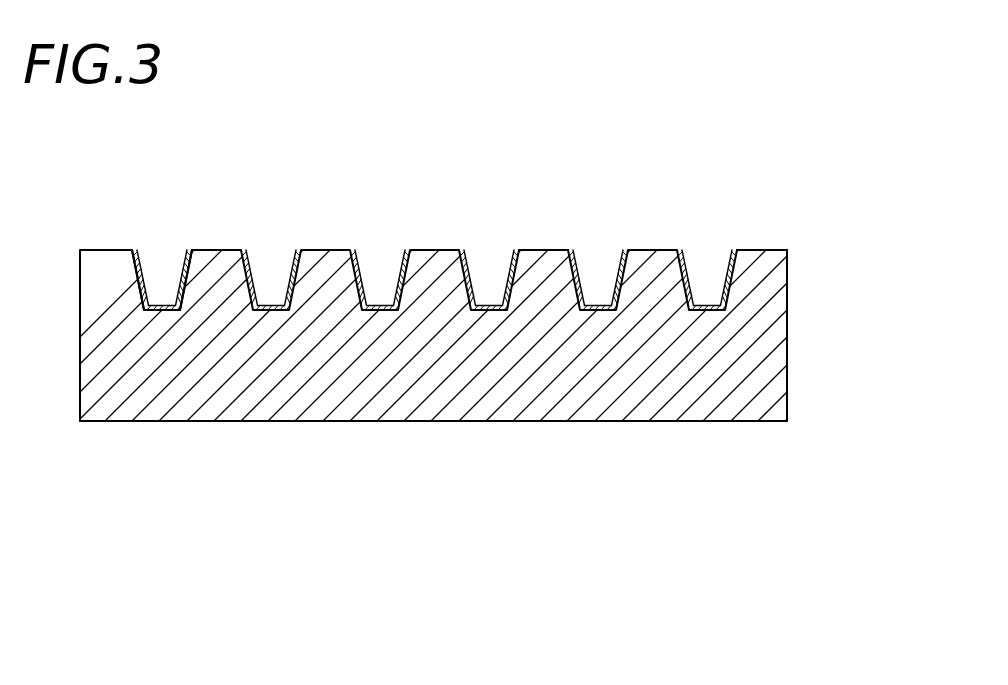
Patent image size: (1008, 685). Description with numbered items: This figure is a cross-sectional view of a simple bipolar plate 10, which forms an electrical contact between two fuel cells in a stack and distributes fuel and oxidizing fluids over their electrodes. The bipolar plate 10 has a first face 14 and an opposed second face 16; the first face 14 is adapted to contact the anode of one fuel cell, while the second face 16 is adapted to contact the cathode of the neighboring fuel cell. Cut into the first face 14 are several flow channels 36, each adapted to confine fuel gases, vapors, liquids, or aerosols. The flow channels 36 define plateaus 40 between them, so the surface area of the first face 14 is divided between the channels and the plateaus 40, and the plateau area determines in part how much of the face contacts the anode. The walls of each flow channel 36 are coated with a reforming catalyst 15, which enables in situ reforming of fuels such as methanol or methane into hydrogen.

The bipolar plate 10 is at (827, 358).
The first face 14 is at (763, 251).
The reforming catalyst 15 is at (390, 272).
The second face 16 is at (753, 422).
The flow channel 36 is at (162, 271).
The plateaus 40 is at (543, 252).